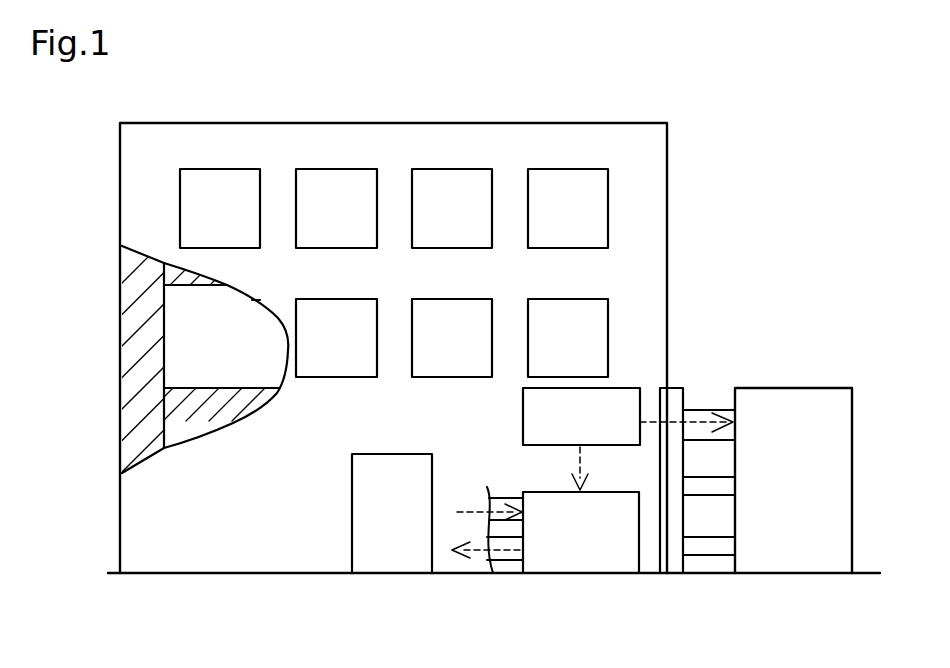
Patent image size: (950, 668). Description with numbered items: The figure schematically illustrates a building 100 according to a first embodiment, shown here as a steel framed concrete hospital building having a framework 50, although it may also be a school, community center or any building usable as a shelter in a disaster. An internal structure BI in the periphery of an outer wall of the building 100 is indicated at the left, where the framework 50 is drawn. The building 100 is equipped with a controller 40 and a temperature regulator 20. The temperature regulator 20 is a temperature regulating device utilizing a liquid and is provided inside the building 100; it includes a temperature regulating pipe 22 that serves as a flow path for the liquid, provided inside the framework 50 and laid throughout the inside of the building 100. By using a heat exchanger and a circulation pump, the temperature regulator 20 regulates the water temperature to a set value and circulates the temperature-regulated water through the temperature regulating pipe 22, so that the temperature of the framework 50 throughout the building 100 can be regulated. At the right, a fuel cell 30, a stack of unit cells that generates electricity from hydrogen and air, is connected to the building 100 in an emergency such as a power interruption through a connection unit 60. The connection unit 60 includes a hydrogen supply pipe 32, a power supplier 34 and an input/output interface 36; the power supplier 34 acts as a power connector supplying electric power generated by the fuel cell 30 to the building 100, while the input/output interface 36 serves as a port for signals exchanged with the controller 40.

The building 100 is at (632, 123).
The framework 50 is at (103, 360).
The internal structure BI is at (88, 292).
The controller 40 is at (632, 388).
The temperature regulator 20 is at (597, 492).
The temperature regulating pipe 22 is at (512, 495).
The connection unit 60 is at (670, 567).
The input/output interface 36 is at (697, 408).
The power supplier 34 is at (720, 487).
The hydrogen supply pipe 32 is at (695, 543).
The fuel cell 30 is at (792, 388).